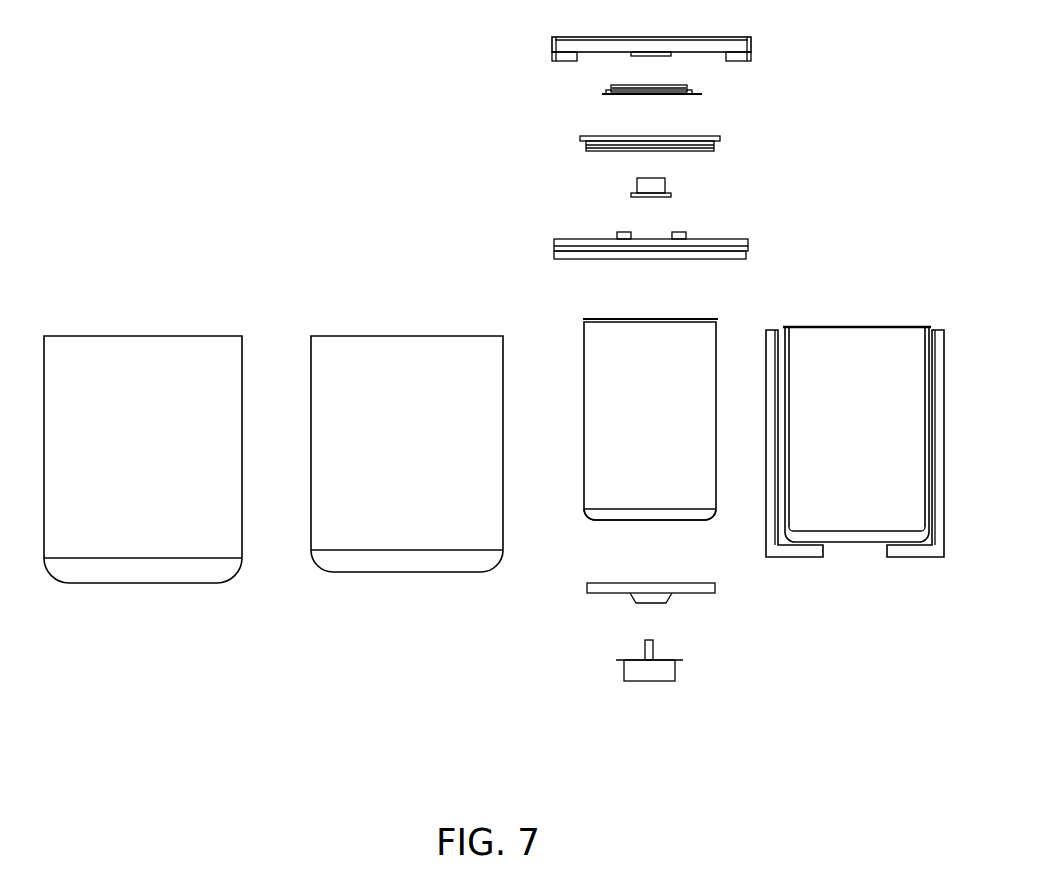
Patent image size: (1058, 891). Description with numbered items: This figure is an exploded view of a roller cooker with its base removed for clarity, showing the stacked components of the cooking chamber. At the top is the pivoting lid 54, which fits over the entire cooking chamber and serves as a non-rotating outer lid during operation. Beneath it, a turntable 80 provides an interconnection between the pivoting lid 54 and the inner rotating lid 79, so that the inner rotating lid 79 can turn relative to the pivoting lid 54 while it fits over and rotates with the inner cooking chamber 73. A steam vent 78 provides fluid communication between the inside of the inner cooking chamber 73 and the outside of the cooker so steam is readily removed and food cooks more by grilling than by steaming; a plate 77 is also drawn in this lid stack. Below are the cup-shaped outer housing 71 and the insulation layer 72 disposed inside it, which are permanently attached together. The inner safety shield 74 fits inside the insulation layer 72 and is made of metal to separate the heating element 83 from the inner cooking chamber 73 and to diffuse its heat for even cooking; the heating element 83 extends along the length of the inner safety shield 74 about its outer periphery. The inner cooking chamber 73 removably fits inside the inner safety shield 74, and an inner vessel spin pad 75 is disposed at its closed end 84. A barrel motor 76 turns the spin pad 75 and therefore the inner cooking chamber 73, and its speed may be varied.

The lid 54 is at (553, 50).
The turntable 80 is at (602, 95).
The inner rotating lid 79 is at (587, 148).
The steam vent 78 is at (633, 193).
The base plate 77 is at (553, 252).
The outer housing 71 is at (90, 575).
The insulation layer 72 is at (344, 555).
The inner cooking chamber 73 is at (605, 513).
The closed end 84 is at (707, 518).
The inner safety shield 74 is at (920, 522).
The heating element 83 is at (767, 328).
The inner vessel spin pad 75 is at (715, 590).
The barrel motor 76 is at (677, 675).